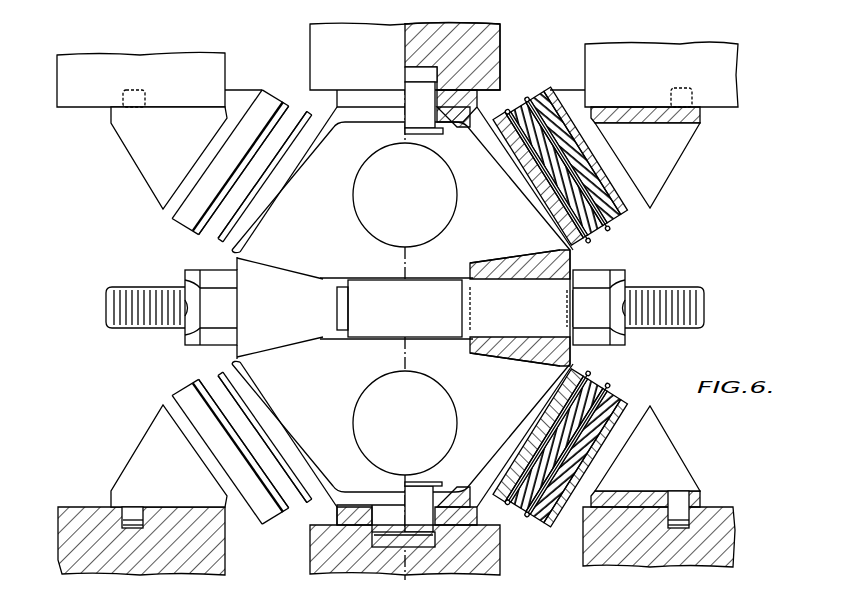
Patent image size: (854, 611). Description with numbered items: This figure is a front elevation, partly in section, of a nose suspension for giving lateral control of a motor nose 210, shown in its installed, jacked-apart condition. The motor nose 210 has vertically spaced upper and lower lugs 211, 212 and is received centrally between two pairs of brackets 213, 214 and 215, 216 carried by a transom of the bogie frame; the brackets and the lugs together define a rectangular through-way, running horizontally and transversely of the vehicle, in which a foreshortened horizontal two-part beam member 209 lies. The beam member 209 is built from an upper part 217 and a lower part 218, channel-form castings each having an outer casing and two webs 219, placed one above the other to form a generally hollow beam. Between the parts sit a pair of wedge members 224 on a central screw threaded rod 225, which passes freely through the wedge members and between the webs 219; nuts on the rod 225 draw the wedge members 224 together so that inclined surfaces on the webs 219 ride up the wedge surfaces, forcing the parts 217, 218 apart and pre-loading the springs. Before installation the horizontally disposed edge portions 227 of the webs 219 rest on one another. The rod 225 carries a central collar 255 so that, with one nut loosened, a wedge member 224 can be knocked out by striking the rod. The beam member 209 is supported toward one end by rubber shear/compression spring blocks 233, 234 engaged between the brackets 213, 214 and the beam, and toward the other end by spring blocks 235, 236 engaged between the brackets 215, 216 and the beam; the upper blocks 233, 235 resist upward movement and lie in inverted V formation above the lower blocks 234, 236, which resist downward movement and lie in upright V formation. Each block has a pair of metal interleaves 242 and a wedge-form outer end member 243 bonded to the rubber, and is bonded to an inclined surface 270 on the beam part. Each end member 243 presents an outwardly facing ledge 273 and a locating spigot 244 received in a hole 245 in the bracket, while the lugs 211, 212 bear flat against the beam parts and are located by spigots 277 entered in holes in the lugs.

The beam member 209 is at (535, 254).
The motor nose 210 is at (503, 55).
The upper lug 211 is at (312, 46).
The lower lug 212 is at (312, 557).
The bracket 213 is at (80, 62).
The bracket 214 is at (89, 555).
The bracket 215 is at (636, 54).
The bracket 216 is at (697, 548).
The upper part of beam member 217 is at (234, 250).
The lower part of beam member 218 is at (340, 473).
The web 219 is at (497, 235).
The wedge member 224 is at (296, 277).
The screw threaded rod 225 is at (162, 291).
The horizontally disposed edge portion 227 is at (436, 276).
The rubber shear/compression spring block 233 is at (218, 194).
The rubber shear/compression spring block 234 is at (228, 437).
The rubber shear/compression spring block 235 is at (603, 180).
The rubber shear/compression spring block 236 is at (607, 414).
The metal interleaf 242 is at (253, 185).
The outer end member 243 is at (128, 121).
The locating spigot 244 is at (146, 80).
The hole 245 is at (138, 528).
The central collar 255 is at (423, 326).
The inclined surface 270 is at (306, 147).
The ledge 273 is at (222, 95).
The spigot 277 is at (422, 86).